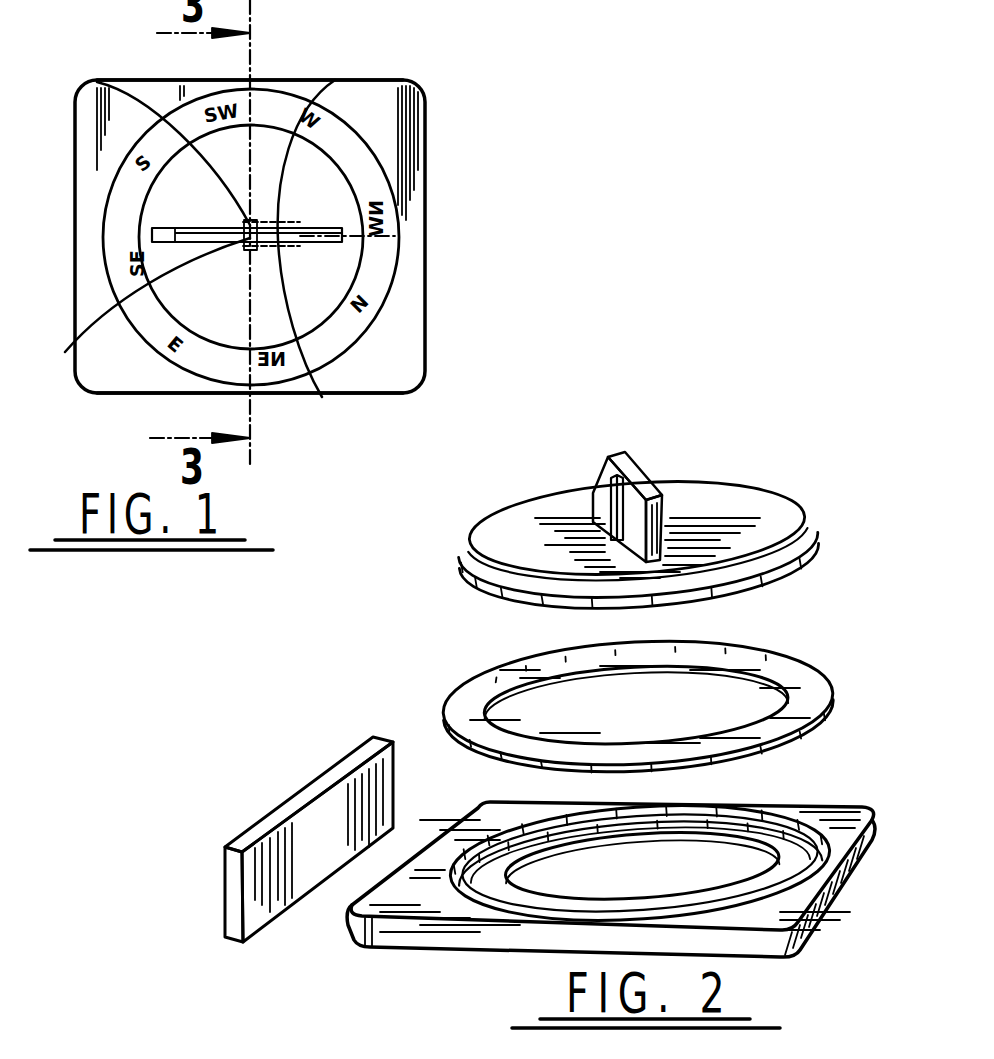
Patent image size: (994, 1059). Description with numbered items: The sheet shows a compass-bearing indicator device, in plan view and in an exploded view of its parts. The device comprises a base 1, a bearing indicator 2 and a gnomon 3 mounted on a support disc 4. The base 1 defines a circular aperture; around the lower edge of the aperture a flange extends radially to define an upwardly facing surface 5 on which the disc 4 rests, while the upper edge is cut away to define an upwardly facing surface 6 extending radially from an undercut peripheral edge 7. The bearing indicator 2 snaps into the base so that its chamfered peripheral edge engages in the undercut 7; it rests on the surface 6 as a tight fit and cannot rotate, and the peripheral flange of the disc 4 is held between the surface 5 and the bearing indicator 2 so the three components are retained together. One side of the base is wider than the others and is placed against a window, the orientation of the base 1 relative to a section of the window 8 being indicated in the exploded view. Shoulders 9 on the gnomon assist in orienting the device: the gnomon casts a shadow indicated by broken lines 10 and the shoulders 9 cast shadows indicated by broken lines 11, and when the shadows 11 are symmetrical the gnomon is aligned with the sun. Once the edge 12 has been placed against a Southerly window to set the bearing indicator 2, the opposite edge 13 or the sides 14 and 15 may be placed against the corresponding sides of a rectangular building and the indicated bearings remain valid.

In FIG. 2, the base 1 is at (818, 925).
In FIG. 2, the bearing indicator 2 is at (790, 675).
In FIG. 2, the gnomon 3 is at (603, 487).
In FIG. 2, the support disc 4 is at (760, 518).
In FIG. 2, the upwardly facing surface 5 is at (672, 838).
In FIG. 2, the upwardly facing surface 6 is at (473, 852).
In FIG. 1, the undercut peripheral edge 7 is at (97, 82).
In FIG. 2, the window 8 is at (233, 875).
In FIG. 1, the shoulders 9 is at (145, 309).
In FIG. 2, the shoulders 9 is at (593, 493).
In FIG. 1, the broken lines 10 is at (378, 242).
In FIG. 1, the broken lines 11 is at (335, 80).
In FIG. 1, the edge 12 is at (75, 243).
In FIG. 1, the edge 13 is at (425, 182).
In FIG. 1, the side 14 is at (192, 80).
In FIG. 1, the side 15 is at (195, 395).